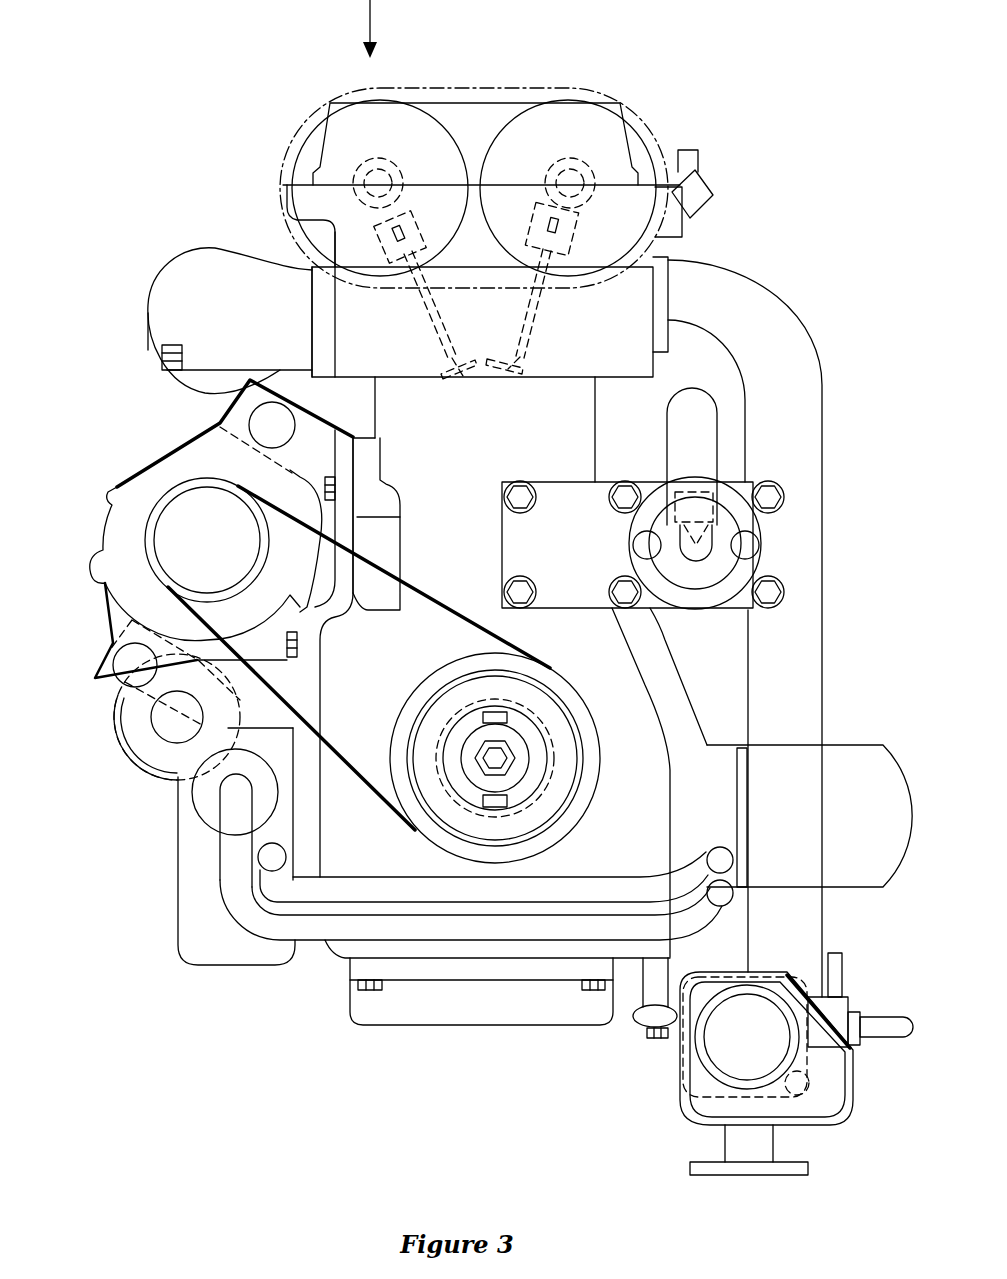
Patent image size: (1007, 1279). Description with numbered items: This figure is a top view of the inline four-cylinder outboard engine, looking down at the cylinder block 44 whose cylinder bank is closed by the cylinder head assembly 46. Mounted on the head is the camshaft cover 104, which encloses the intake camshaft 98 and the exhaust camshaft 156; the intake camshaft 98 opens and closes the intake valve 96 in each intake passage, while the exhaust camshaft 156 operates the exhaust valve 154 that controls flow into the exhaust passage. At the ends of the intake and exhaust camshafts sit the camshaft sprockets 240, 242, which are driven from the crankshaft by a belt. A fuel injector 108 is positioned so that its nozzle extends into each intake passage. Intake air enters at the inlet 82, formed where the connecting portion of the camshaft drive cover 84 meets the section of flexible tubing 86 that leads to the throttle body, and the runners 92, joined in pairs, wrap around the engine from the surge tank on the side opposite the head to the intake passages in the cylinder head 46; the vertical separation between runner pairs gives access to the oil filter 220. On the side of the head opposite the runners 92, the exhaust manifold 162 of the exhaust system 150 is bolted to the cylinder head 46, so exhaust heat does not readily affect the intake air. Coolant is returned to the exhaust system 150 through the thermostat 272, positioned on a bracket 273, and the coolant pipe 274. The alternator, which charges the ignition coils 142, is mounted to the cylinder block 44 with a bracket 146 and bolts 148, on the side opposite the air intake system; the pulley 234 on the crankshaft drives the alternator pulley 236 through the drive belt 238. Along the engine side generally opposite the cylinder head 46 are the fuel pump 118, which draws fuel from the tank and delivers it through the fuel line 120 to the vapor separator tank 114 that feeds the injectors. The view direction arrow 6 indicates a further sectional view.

The section view arrow 6 is at (341, 29).
The camshaft cover 104 is at (487, 115).
The exhaust camshaft 156 is at (380, 172).
The intake camshaft 98 is at (572, 172).
The fuel injector 108 is at (703, 183).
The cylinder head assembly 46 is at (640, 316).
The camshaft sprocket 240 is at (438, 250).
The camshaft sprocket 242 is at (357, 322).
The valve 154 is at (437, 303).
The intake valve 96 is at (533, 313).
The exhaust system 150 is at (189, 226).
The exhaust manifold 162 is at (153, 263).
The runners 92 is at (767, 300).
The coolant pipe 274 is at (698, 410).
The bracket 273 is at (563, 493).
The thermostat 272 is at (723, 562).
The ignition coils 142 is at (160, 440).
The pulley 236 is at (143, 535).
The bolts 148 is at (337, 488).
The cylinder block 44 is at (397, 535).
The bracket 146 is at (345, 568).
The oil filter 220 is at (860, 758).
The pulley 234 is at (457, 665).
The drive belt 238 is at (342, 767).
The fuel pump 118 is at (135, 763).
The vapor separator tank 114 is at (187, 910).
The fuel line 120 is at (258, 915).
The inlet 82 is at (718, 1045).
The camshaft drive cover 84 is at (858, 1088).
The flexible tubing 86 is at (753, 1073).